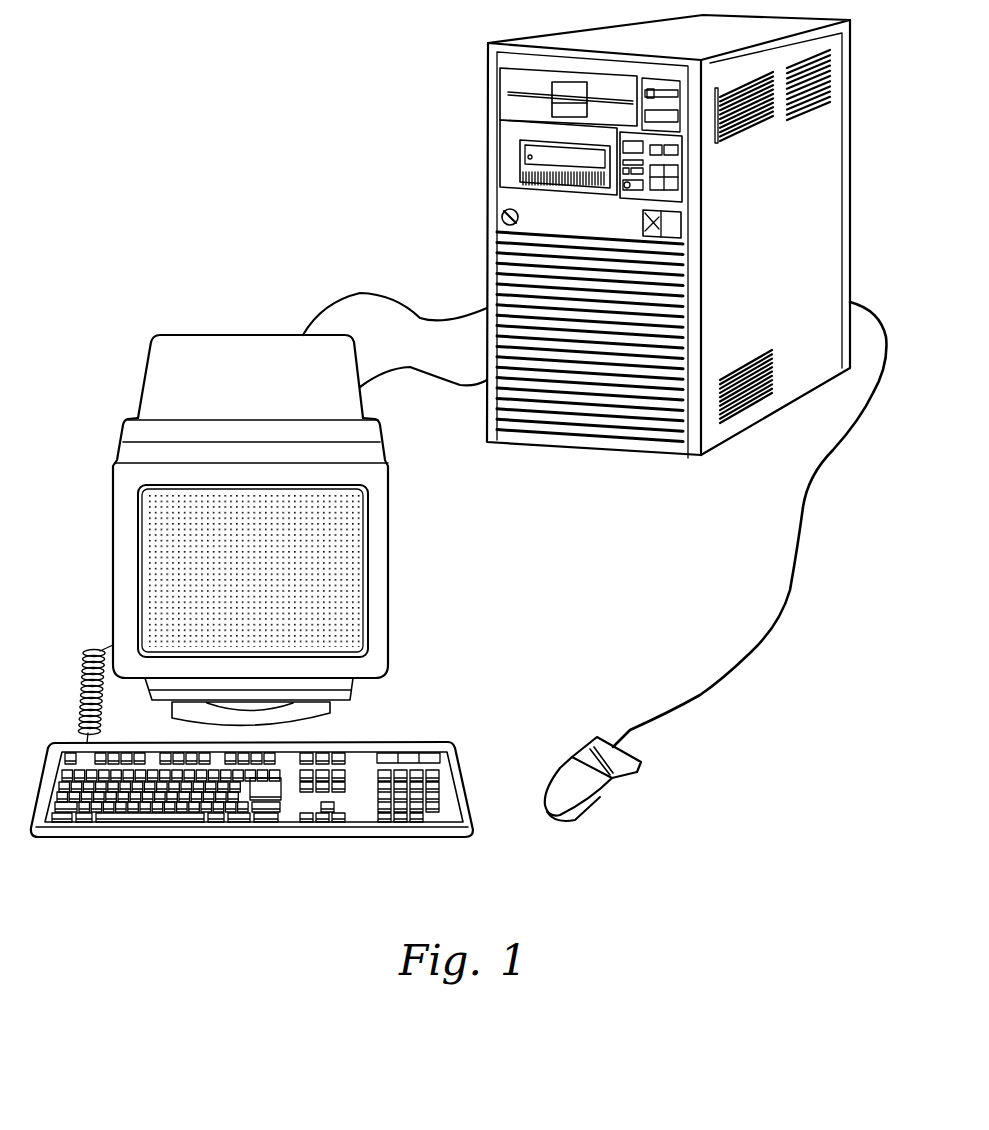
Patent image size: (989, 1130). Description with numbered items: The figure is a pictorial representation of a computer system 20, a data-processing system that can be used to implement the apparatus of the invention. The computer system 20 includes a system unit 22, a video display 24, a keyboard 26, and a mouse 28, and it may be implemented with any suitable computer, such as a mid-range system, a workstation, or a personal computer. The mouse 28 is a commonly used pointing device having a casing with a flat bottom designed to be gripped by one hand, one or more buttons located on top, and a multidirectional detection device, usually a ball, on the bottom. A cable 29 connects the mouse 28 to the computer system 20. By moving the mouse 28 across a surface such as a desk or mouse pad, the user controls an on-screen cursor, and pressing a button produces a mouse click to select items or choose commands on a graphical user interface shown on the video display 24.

The computer system 20 is at (286, 215).
The system unit 22 is at (497, 198).
The video display 24 is at (265, 357).
The keyboard 26 is at (280, 833).
The mouse 28 is at (600, 798).
The cable 29 is at (750, 655).